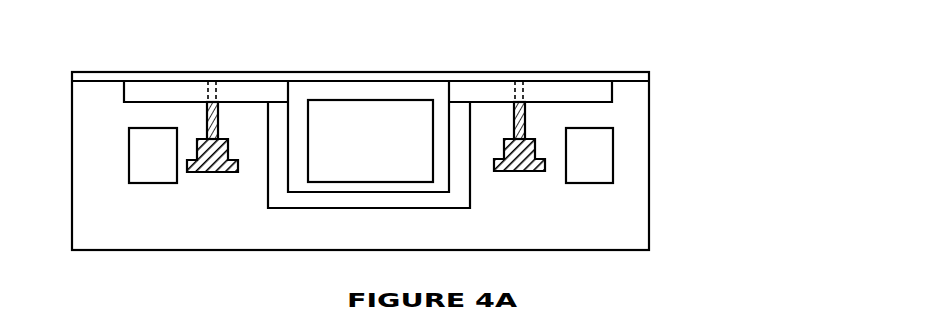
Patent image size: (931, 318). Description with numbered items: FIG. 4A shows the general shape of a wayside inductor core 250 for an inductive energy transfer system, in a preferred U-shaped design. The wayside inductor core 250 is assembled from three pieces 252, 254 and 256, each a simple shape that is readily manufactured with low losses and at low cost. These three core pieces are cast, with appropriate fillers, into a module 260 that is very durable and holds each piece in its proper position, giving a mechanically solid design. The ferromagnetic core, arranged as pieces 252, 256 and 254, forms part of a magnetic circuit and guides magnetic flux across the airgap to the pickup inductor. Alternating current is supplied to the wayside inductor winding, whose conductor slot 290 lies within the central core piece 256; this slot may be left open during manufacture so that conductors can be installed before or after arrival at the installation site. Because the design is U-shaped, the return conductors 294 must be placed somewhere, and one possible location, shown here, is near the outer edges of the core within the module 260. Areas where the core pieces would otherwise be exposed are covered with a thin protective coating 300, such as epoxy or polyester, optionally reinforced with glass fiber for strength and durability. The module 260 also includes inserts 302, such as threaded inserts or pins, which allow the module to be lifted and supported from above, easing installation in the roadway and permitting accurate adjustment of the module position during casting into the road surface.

The wayside inductor core 250 is at (150, 46).
The core piece 252 is at (145, 108).
The core piece 254 is at (596, 103).
The core piece 256 is at (380, 210).
The module 260 is at (360, 161).
The inductor winding side / conductor slot 290 is at (370, 141).
The return conductors 294 is at (371, 155).
The protective coating 300 is at (622, 75).
The inserts 302 is at (366, 140).